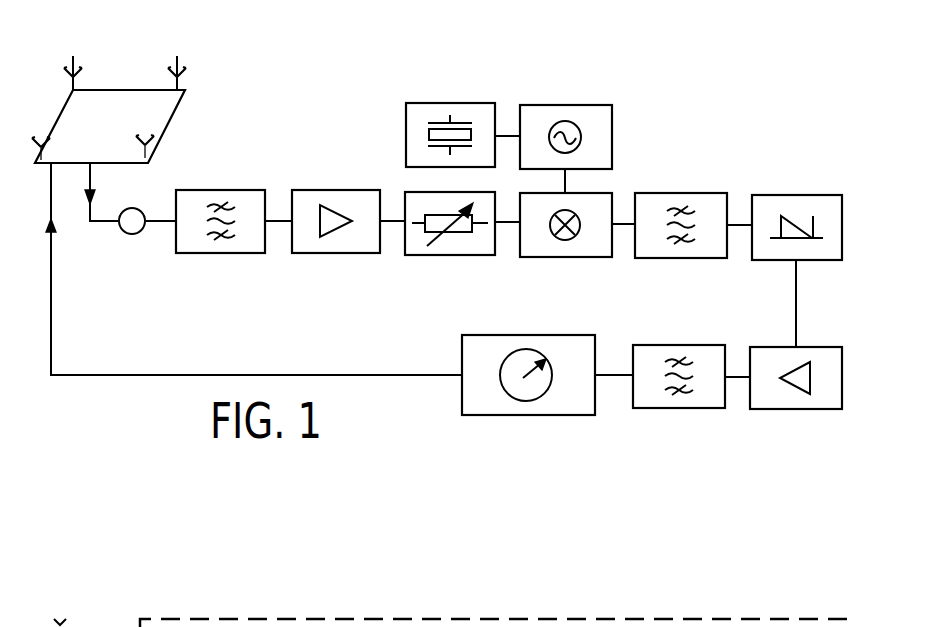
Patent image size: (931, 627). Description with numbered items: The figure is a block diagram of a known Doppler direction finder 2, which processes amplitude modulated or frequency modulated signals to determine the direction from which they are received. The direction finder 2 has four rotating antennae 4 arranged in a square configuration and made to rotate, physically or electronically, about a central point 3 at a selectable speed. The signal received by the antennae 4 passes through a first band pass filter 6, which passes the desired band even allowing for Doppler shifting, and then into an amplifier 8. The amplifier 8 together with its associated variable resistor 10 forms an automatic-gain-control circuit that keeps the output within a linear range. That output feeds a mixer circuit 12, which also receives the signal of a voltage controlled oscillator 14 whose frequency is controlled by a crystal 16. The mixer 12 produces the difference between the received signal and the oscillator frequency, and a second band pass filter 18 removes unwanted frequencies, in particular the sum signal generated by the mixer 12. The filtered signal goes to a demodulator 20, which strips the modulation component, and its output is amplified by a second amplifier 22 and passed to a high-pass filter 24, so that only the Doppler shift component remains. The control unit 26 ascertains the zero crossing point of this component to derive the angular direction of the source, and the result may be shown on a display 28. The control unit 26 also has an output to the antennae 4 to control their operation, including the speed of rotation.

The Doppler direction finder 2 is at (636, 69).
The central point 3 is at (109, 121).
The rotating antennae 4 is at (206, 84).
The first band pass filter 6 is at (232, 190).
The amplifier 8 is at (348, 190).
The variable resistor 10 is at (460, 256).
The mixer circuit 12 is at (578, 257).
The voltage controlled oscillator 14 is at (578, 105).
The crystal 16 is at (462, 103).
The second band pass filter 18 is at (695, 193).
The demodulator 20 is at (808, 195).
The second amplifier 22 is at (805, 409).
The high-pass filter 24 is at (695, 408).
The control unit 26 is at (558, 415).
The display 28 is at (525, 350).